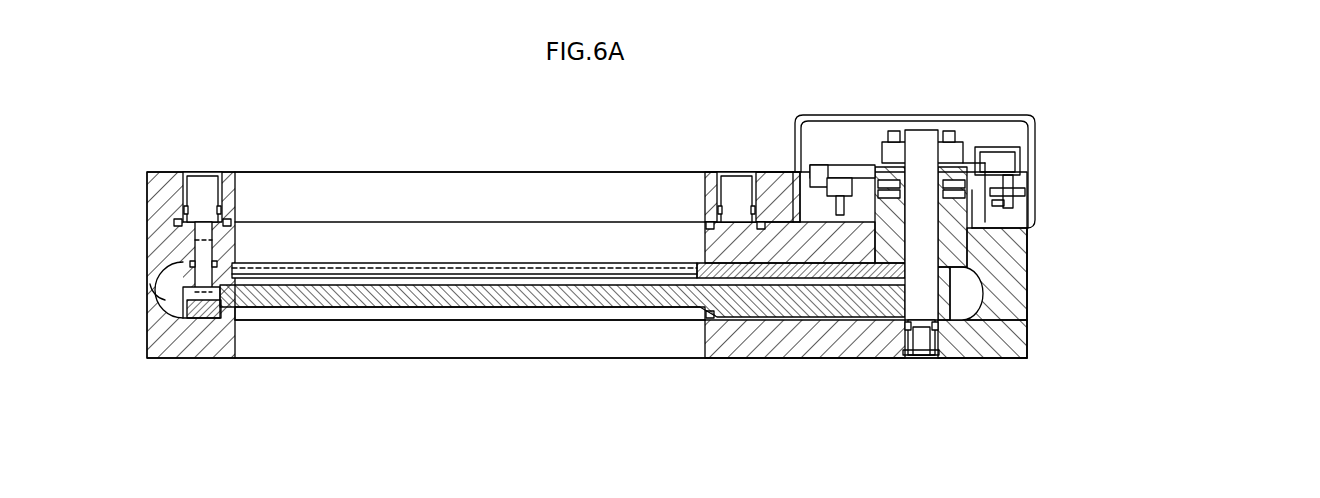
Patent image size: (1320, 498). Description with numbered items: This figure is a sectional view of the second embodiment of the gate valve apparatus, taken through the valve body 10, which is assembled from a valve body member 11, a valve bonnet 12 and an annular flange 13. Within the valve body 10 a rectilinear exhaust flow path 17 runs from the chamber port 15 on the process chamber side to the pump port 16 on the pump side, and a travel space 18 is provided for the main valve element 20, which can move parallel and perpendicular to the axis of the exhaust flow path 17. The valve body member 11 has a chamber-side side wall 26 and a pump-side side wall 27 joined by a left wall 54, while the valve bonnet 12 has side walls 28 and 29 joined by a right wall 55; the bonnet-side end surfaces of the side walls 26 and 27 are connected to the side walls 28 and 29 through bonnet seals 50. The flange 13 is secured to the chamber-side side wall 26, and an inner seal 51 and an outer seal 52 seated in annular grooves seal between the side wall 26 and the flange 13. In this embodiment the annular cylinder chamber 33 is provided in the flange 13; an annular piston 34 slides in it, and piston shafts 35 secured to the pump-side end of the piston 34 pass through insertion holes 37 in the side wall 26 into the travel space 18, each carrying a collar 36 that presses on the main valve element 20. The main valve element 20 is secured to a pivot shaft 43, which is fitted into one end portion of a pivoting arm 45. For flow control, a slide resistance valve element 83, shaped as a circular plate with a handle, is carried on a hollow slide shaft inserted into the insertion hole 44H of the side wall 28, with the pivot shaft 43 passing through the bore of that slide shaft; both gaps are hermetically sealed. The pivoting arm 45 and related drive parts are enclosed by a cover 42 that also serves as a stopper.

The valve body 10 is at (138, 158).
The valve body member 11 is at (762, 360).
The valve bonnet 12 is at (1008, 358).
The flange 13 is at (778, 262).
The chamber port 15 is at (670, 180).
The pump port 16 is at (675, 340).
The exhaust flow path 17 is at (470, 320).
The travel space 18 is at (165, 282).
The main valve element 20 is at (535, 300).
The chamber-side side wall 26 is at (781, 220).
The pump-side side wall 27 is at (805, 340).
The side wall 28 is at (980, 240).
The side wall 29 is at (965, 355).
The annular cylinder chamber 33 is at (162, 196).
The annular piston 34 is at (203, 176).
The piston shaft 35 is at (200, 240).
The collar 36 is at (202, 318).
The insertion hole 37 is at (218, 240).
The cover 42 is at (995, 117).
The pivot shaft 43 is at (925, 283).
The insertion hole 44H is at (985, 212).
The pivoting arm 45 is at (968, 155).
The bonnet seal 50 is at (872, 335).
The inner seal 51 is at (705, 229).
The outer seal 52 is at (153, 220).
The left wall 54 is at (145, 295).
The right wall 55 is at (1005, 297).
The slide resistance valve element 83 is at (388, 285).